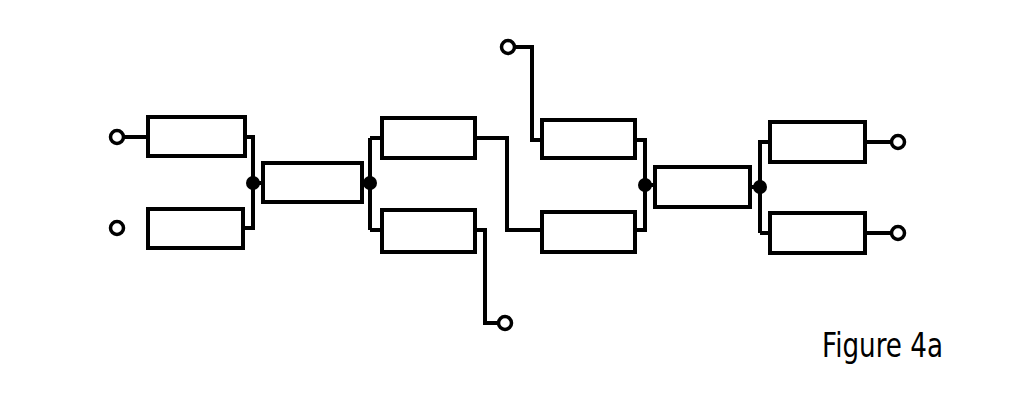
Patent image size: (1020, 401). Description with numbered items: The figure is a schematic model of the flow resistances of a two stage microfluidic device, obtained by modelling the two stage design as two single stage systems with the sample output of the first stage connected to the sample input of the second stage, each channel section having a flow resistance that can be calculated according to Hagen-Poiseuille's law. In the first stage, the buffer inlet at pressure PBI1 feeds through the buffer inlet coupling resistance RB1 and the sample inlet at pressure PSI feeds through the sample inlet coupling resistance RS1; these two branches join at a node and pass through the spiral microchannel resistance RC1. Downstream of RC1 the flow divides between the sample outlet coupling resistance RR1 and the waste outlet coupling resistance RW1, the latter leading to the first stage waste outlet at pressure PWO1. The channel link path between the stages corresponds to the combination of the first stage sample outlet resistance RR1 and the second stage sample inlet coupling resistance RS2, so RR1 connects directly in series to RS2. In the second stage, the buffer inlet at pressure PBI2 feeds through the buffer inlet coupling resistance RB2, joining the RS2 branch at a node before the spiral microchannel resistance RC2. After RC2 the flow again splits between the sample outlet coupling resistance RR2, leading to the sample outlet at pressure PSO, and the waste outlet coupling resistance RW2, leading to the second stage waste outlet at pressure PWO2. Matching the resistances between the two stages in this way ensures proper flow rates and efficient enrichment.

The buffer inlet coupling portion flow resistance of the first stage RB1 is at (196, 118).
The sample inlet coupling portion flow resistance of the first stage RS1 is at (195, 209).
The spiral microchannel portion flow resistance of the first stage RC1 is at (312, 164).
The sample outlet coupling portion flow resistance of the first stage RR1 is at (428, 119).
The waste outlet coupling portion flow resistance of the first stage RW1 is at (428, 211).
The buffer inlet coupling portion flow resistance of the second stage RB2 is at (588, 120).
The sample inlet coupling portion flow resistance of the second stage RS2 is at (588, 212).
The spiral microchannel portion flow resistance of the second stage RC2 is at (702, 167).
The sample outlet coupling portion flow resistance of the second stage RR2 is at (817, 123).
The waste outlet coupling portion flow resistance of the second stage RW2 is at (817, 214).
The buffer inlet pressure of the first stage PBI1 is at (90, 134).
The sample inlet pressure PSI is at (94, 224).
The buffer inlet pressure of the second stage PBI2 is at (481, 42).
The waste outlet pressure of the first stage PWO1 is at (540, 319).
The sample outlet pressure PSO is at (924, 139).
The waste outlet pressure of the second stage PWO2 is at (932, 232).